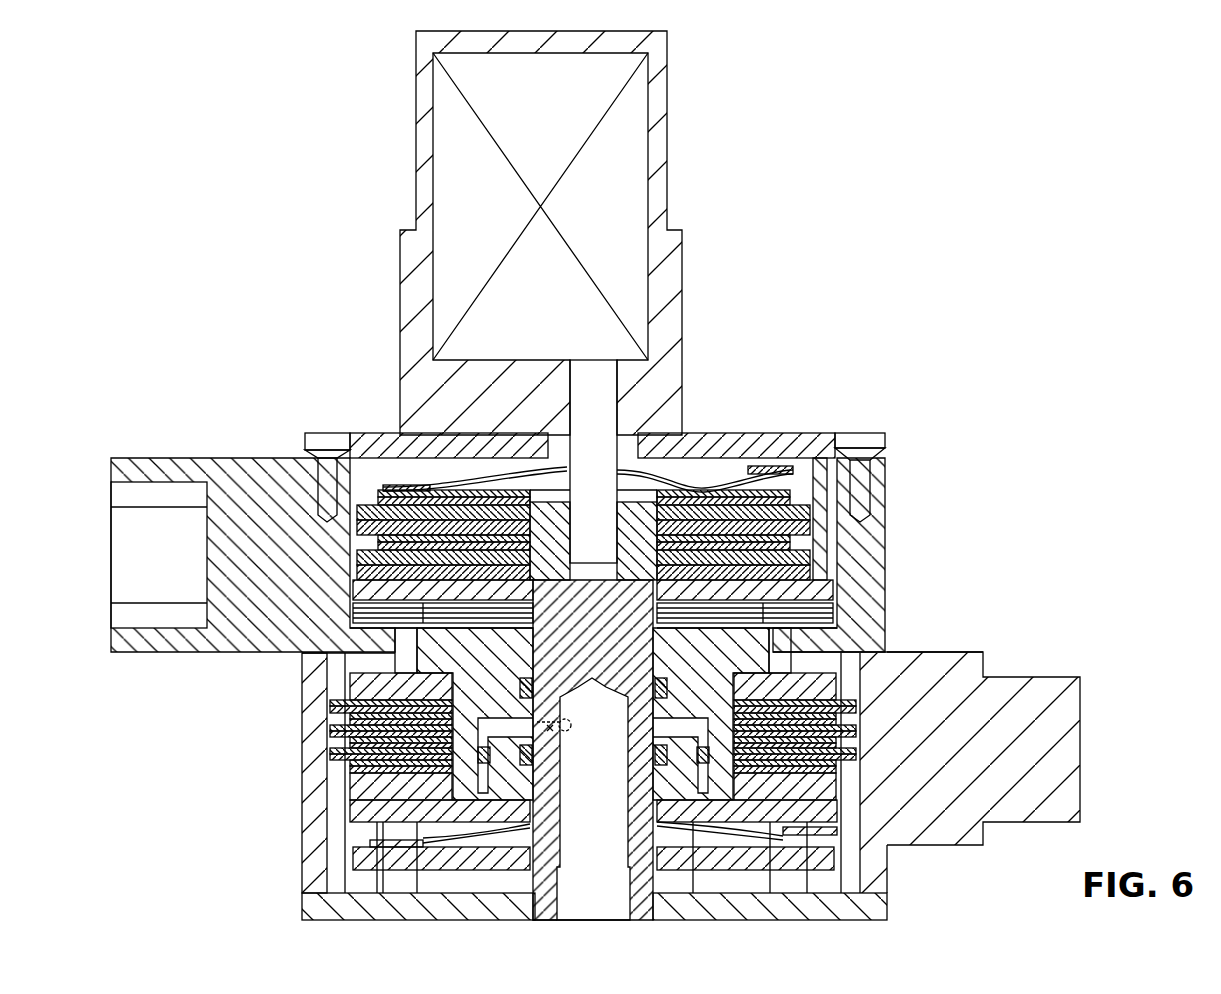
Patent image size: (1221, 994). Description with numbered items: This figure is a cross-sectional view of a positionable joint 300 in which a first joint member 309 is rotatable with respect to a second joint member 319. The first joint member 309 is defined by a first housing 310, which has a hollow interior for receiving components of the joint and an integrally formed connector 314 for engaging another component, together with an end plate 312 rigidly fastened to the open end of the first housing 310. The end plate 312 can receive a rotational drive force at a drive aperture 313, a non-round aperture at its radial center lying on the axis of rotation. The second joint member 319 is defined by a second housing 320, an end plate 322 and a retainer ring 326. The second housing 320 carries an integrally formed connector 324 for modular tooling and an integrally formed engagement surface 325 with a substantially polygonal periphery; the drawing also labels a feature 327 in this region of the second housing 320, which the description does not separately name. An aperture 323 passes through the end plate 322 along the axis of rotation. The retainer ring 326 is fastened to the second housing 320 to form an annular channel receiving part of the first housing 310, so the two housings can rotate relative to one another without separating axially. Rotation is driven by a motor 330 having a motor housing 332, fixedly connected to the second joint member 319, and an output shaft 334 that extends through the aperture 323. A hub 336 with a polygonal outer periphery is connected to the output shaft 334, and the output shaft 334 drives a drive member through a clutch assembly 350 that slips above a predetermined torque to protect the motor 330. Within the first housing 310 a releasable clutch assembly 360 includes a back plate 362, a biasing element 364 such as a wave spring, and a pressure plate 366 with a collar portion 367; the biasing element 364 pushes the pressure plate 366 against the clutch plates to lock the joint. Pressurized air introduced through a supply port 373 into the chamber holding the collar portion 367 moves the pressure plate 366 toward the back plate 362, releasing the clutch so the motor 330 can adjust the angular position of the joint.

The positionable joint 300 is at (872, 205).
The first joint member 309 is at (922, 648).
The first housing 310 is at (310, 793).
The end plate 312 is at (300, 907).
The drive aperture 313 is at (531, 897).
The connector 314 is at (965, 652).
The second joint member 319 is at (290, 428).
The second housing 320 is at (887, 520).
The end plate 322 is at (815, 438).
The aperture 323 is at (648, 448).
The connector 324 is at (145, 455).
The engagement surface 325 is at (455, 728).
The fluid channel 327 is at (700, 732).
The motor 330 is at (672, 142).
The motor housing 332 is at (683, 280).
The output shaft 334 is at (618, 374).
The hub 336 is at (550, 585).
The clutch assembly 350 is at (350, 540).
The releasable clutch assembly 360 is at (322, 747).
The back plate 362 is at (350, 857).
The biasing element 364 is at (370, 842).
The pressure plate 366 is at (350, 807).
The collar portion 367 is at (508, 753).
The supply port 373 is at (568, 732).
The retainer ring 326 is at (350, 692).